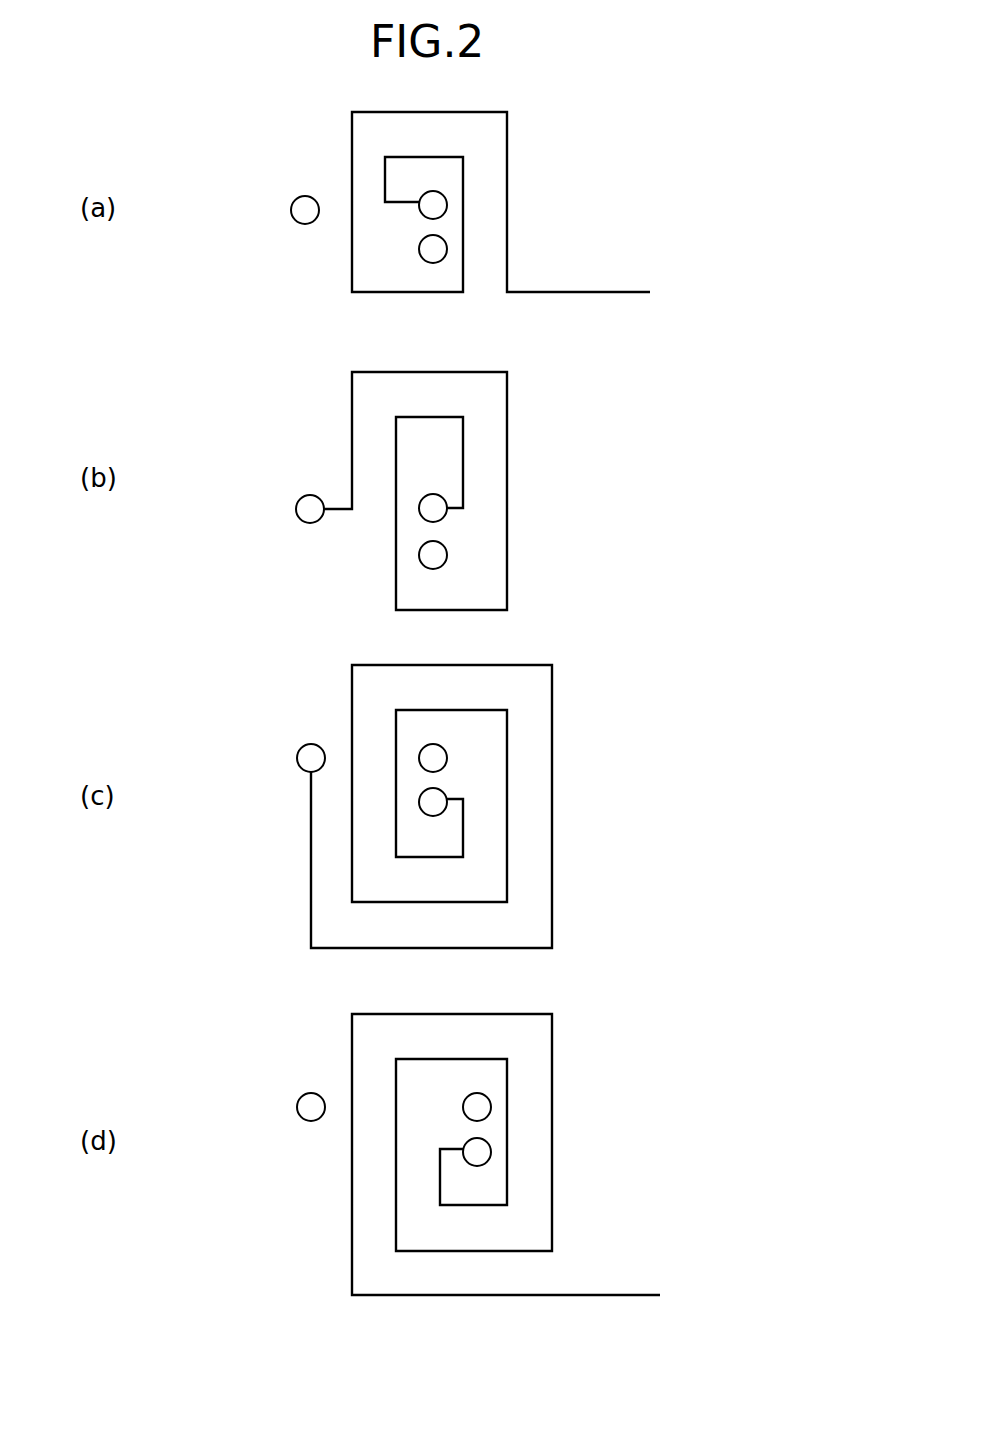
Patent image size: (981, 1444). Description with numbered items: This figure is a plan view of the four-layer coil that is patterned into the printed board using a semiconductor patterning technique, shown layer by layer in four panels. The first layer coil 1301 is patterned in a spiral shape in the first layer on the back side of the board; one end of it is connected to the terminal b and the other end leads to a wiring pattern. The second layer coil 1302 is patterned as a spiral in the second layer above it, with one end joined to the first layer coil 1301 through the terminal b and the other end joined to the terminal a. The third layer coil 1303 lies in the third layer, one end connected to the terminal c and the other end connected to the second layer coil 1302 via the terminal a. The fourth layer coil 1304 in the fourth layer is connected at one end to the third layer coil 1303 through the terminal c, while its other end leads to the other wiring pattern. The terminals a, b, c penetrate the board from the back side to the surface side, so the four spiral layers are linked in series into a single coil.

The first layer coil 1301 is at (507, 147).
The second layer coil 1302 is at (507, 405).
The third layer coil 1303 is at (552, 688).
The fourth layer coil 1304 is at (552, 1038).
The terminal a is at (300, 209).
The terminal b is at (437, 202).
The terminal c is at (437, 249).